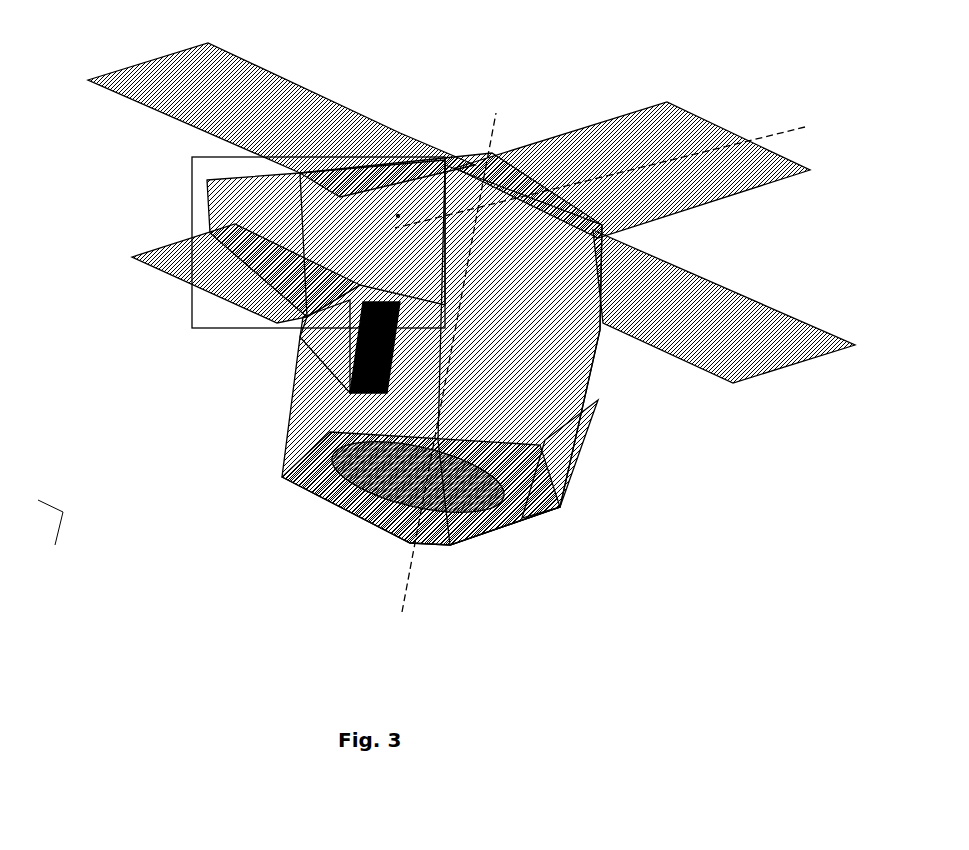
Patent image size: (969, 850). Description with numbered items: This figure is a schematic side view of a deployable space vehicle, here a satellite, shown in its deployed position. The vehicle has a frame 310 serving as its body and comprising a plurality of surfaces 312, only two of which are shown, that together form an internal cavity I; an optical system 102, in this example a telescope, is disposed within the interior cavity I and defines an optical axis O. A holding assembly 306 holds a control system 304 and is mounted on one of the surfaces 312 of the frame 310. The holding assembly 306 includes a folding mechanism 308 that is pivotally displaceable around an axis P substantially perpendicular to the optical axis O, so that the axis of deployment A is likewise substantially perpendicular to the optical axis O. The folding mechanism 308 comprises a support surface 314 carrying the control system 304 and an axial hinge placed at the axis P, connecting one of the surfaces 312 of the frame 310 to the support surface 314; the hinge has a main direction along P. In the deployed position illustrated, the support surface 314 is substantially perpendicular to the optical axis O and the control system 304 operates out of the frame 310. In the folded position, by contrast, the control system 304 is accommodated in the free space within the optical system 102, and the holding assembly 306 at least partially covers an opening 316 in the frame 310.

The optical system 102 is at (497, 442).
The control system 304 is at (227, 263).
The holding assembly 306 is at (205, 155).
The folding mechanism 308 is at (400, 230).
The frame 310 is at (567, 470).
The surfaces 312 is at (390, 397).
The support surface 314 is at (267, 175).
The opening 316 is at (333, 373).
The interior cavity I is at (517, 513).
The optical axis O is at (446, 381).
The axis P is at (617, 177).
The axis of deployment A is at (398, 206).